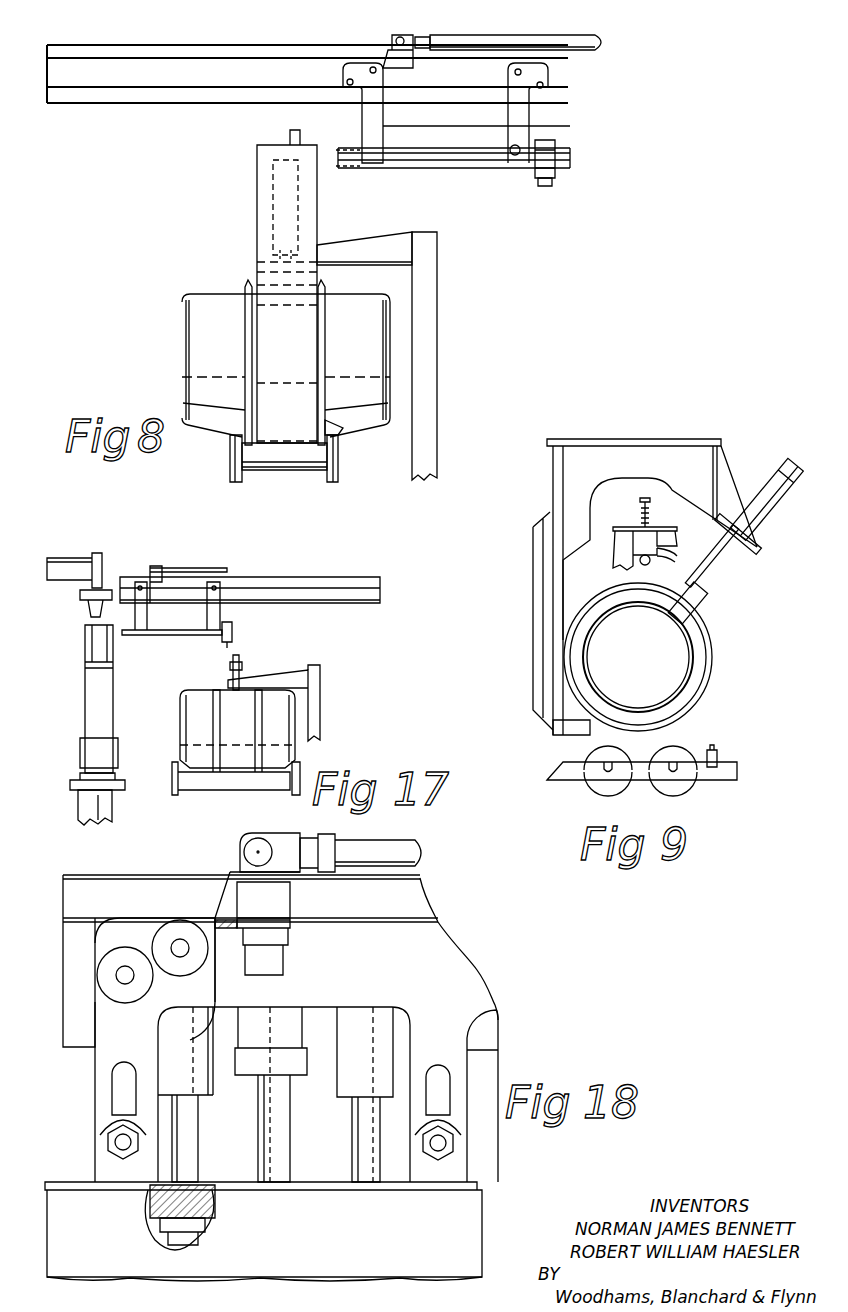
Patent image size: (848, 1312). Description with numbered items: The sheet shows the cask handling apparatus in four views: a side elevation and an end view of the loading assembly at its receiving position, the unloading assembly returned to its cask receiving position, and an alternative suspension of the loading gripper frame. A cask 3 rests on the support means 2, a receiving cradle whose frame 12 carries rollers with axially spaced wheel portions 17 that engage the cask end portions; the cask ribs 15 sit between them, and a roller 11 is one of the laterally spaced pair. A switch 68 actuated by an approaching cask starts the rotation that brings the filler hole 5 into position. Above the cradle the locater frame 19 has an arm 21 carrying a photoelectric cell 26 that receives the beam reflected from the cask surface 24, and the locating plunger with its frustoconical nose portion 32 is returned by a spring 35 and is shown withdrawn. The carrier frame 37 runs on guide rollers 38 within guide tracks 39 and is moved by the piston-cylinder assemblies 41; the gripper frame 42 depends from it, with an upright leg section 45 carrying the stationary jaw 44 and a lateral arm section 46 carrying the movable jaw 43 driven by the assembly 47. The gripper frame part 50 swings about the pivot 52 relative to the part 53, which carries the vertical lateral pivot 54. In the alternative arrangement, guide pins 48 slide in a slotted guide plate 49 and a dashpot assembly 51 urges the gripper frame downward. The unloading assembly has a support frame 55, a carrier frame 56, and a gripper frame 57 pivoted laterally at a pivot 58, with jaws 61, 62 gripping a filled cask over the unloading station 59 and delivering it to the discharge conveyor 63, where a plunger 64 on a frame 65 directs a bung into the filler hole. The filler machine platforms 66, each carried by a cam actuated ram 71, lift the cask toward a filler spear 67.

In FIG. 9, the support means 2 is at (560, 750).
In FIG. 8, the cask 3 is at (200, 338).
In FIG. 9, the cask 3 is at (680, 682).
In FIG. 17, the cask 3 is at (190, 722).
In FIG. 9, the filler hole 5 is at (636, 603).
In FIG. 8, the roller 11 is at (272, 478).
In FIG. 9, the frame 12 is at (720, 778).
In FIG. 8, the circular ribs 15 is at (248, 300).
In FIG. 8, the wheel portions 17 is at (230, 468).
In FIG. 9, the wheel portions 17 is at (600, 792).
In FIG. 8, the locater frame 19 is at (438, 310).
In FIG. 9, the locater frame 19 is at (618, 562).
In FIG. 8, the arm 21 is at (370, 215).
In FIG. 9, the surface 24 is at (712, 652).
In FIG. 9, the photoelectric cell 26 is at (678, 556).
In FIG. 9, the nose portion 32 is at (700, 576).
In FIG. 9, the spring 35 is at (651, 512).
In FIG. 8, the carrier frame 37 is at (375, 135).
In FIG. 9, the carrier frame 37 is at (585, 438).
In FIG. 18, the carrier frame 37 is at (445, 952).
In FIG. 18, the guide rollers 38 is at (125, 960).
In FIG. 8, the guide tracks 39 is at (85, 50).
In FIG. 18, the guide tracks 39 is at (410, 905).
In FIG. 8, the pneumatic piston-cylinder assemblies 41 is at (590, 40).
In FIG. 18, the pneumatic piston-cylinder assemblies 41 is at (420, 852).
In FIG. 8, the gripper frame 42 is at (256, 195).
In FIG. 9, the gripper frame 42 is at (531, 634).
In FIG. 18, the gripper frame 42 is at (455, 1175).
In FIG. 8, the gripper jaw 43 is at (262, 262).
In FIG. 9, the gripper jaw 43 is at (708, 610).
In FIG. 8, the gripper jaw 44 is at (330, 428).
In FIG. 9, the gripper jaw 44 is at (560, 720).
In FIG. 9, the upright leg section 45 is at (531, 578).
In FIG. 9, the lateral arm section 46 is at (650, 455).
In FIG. 8, the pneumatic piston-cylinder assembly 47 is at (283, 178).
In FIG. 9, the pneumatic piston-cylinder assembly 47 is at (770, 522).
In FIG. 18, the guide pins 48 is at (118, 1140).
In FIG. 18, the slotted guide plate 49 is at (110, 1055).
In FIG. 8, the part of the gripper frame 50 is at (455, 150).
In FIG. 18, the pneumatic piston-cylinder assembly 51 is at (178, 1025).
In FIG. 8, the pivot 52 is at (513, 155).
In FIG. 8, the part of the gripper frame 53 is at (556, 158).
In FIG. 8, the pivotal mounting 54 is at (548, 186).
In FIG. 17, the support frame 55 is at (280, 578).
In FIG. 17, the carrier frame 56 is at (218, 612).
In FIG. 17, the gripper frame 57 is at (120, 708).
In FIG. 17, the pivot 58 is at (222, 640).
In FIG. 17, the unloading station 59 is at (70, 800).
In FIG. 17, the jaw 61 is at (100, 677).
In FIG. 17, the jaw 62 is at (82, 740).
In FIG. 17, the discharge conveyor 63 is at (205, 780).
In FIG. 17, the plunger 64 is at (232, 672).
In FIG. 17, the frame 65 is at (322, 698).
In FIG. 17, the cask supporting platforms 66 is at (75, 780).
In FIG. 17, the filler spears 67 is at (90, 620).
In FIG. 9, the switch 68 is at (717, 748).
In FIG. 17, the cam actuated ram 71 is at (100, 805).